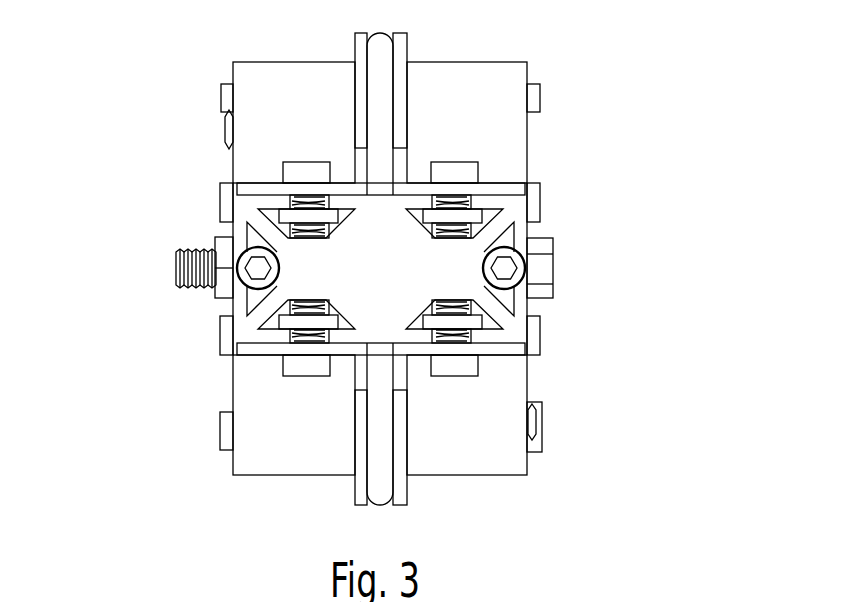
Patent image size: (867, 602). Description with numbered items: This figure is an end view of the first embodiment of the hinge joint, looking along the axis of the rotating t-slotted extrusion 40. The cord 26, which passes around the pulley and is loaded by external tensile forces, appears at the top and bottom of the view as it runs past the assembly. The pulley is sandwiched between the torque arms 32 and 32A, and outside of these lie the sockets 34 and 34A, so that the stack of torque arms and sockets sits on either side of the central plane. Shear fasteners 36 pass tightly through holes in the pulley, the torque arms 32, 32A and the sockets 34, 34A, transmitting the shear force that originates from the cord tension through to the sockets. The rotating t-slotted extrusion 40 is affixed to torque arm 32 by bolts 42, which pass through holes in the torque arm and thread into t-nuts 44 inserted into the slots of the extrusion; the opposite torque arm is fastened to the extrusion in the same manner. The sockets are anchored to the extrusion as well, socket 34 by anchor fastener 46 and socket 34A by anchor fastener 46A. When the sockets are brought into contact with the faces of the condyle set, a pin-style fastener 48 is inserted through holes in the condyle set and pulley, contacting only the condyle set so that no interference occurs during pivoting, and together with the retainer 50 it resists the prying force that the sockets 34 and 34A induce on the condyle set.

The cord 26 is at (378, 87).
The torque arm 32 is at (360, 459).
The torque arm 32A is at (402, 438).
The socket 34 is at (275, 430).
The socket 34A is at (485, 419).
The shear fasteners 36 is at (225, 342).
The rotating t-slotted extrusion 40 is at (305, 283).
The bolts 42 is at (302, 172).
The t-nuts 44 is at (292, 217).
The anchor fastener 46 is at (257, 272).
The anchor fastener 46A is at (518, 262).
The pin-style fastener 48 is at (547, 258).
The retainer 50 is at (223, 255).